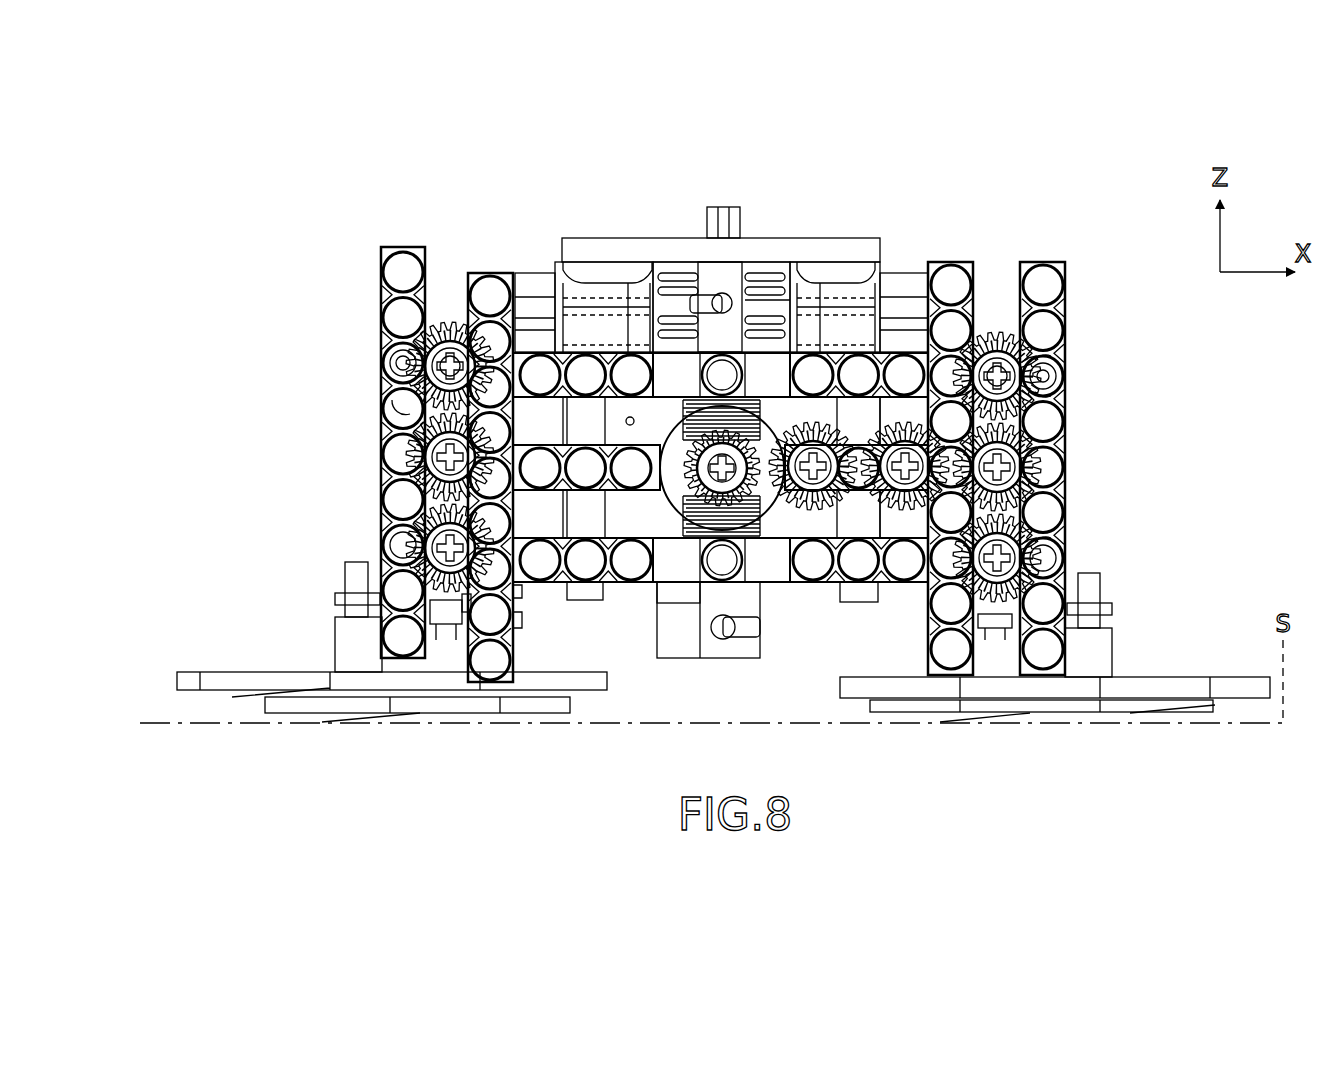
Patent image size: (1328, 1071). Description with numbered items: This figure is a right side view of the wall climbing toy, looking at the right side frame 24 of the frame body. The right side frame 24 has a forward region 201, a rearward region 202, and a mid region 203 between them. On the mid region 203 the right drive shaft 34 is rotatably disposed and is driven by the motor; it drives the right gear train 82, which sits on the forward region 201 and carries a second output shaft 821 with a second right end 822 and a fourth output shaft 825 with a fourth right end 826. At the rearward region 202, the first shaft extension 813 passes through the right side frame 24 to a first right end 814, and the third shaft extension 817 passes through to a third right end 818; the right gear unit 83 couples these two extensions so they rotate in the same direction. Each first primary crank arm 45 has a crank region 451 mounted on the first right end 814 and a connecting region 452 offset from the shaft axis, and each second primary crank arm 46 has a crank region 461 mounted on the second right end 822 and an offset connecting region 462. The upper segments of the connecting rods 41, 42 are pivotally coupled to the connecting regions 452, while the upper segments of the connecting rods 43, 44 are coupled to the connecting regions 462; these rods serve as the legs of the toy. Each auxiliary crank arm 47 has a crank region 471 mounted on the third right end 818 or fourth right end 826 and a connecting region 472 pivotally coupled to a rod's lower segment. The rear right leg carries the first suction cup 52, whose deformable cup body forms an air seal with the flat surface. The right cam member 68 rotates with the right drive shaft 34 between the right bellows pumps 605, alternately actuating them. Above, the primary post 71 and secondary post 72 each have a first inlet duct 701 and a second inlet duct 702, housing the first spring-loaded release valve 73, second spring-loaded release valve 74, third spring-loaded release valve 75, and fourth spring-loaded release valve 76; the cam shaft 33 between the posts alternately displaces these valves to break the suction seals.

The first connecting rod 42 is at (400, 247).
The first connecting rod 41 is at (490, 273).
The second connecting rod 44 is at (951, 262).
The second connecting rod 43 is at (1043, 262).
The first primary crank arm 45 is at (445, 325).
The crank region 451 is at (453, 322).
The second primary crank arm 46 is at (1003, 333).
The crank region 461 is at (992, 330).
The connecting region 452 is at (392, 358).
The first shaft extension 813 is at (396, 378).
The first right end 814 is at (410, 400).
The connecting region 472 is at (398, 545).
The second output shaft 821 is at (1062, 360).
The connecting region 462 is at (1062, 383).
The second right end 822 is at (1064, 395).
The fourth output shaft 825 is at (1068, 543).
The fourth right end 826 is at (1075, 553).
The auxiliary crank arm 47 is at (440, 624).
The crank region 471 is at (467, 612).
The third shaft extension 817 is at (522, 590).
The third right end 818 is at (520, 620).
The right side frame 24 is at (860, 262).
The cam shaft 33 is at (727, 207).
The rearward region 202 is at (528, 273).
The forward region 201 is at (905, 370).
The primary post 71 is at (596, 235).
The secondary post 72 is at (853, 249).
The first inlet duct 701 is at (592, 292).
The second inlet duct 702 is at (618, 330).
The first spring-loaded release valve 73 is at (668, 300).
The second spring-loaded release valve 74 is at (715, 246).
The third spring-loaded release valve 75 is at (765, 280).
The fourth spring-loaded release valve 76 is at (776, 335).
The mid region 203 is at (690, 372).
The right drive shaft 34 is at (735, 478).
The right cam member 68 is at (702, 495).
The right gear unit 83 is at (592, 532).
The right gear train 82 is at (858, 518).
The right bellows pump 605 is at (762, 592).
The first suction cup 52 is at (248, 705).